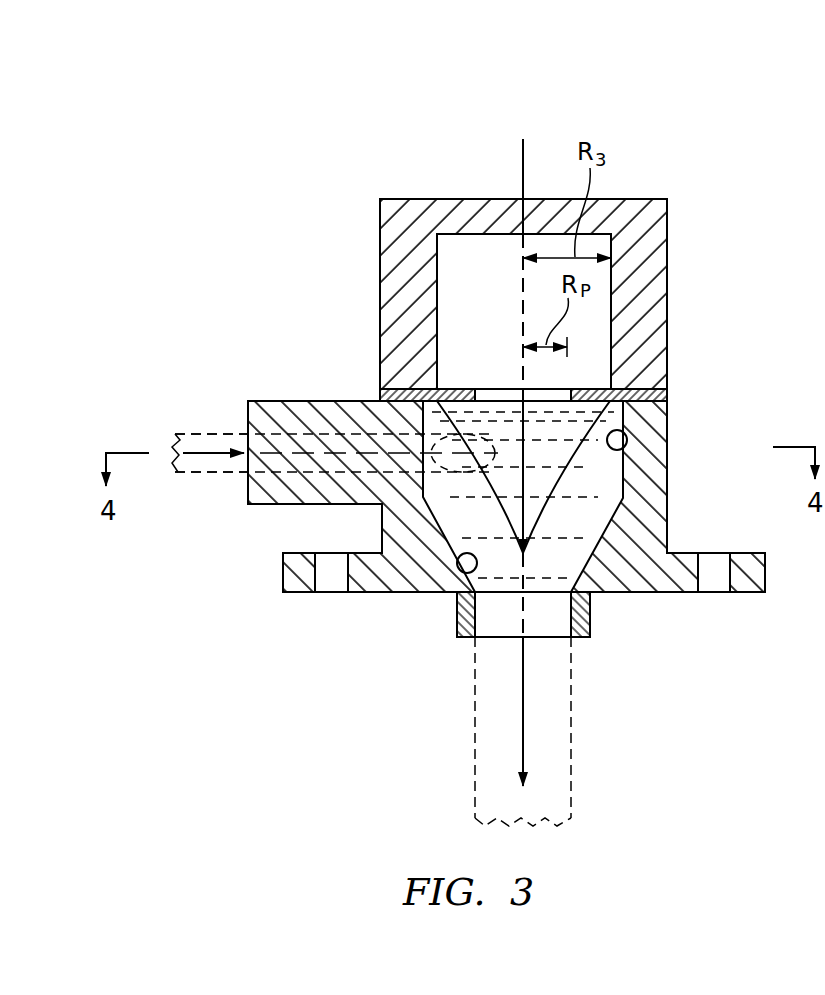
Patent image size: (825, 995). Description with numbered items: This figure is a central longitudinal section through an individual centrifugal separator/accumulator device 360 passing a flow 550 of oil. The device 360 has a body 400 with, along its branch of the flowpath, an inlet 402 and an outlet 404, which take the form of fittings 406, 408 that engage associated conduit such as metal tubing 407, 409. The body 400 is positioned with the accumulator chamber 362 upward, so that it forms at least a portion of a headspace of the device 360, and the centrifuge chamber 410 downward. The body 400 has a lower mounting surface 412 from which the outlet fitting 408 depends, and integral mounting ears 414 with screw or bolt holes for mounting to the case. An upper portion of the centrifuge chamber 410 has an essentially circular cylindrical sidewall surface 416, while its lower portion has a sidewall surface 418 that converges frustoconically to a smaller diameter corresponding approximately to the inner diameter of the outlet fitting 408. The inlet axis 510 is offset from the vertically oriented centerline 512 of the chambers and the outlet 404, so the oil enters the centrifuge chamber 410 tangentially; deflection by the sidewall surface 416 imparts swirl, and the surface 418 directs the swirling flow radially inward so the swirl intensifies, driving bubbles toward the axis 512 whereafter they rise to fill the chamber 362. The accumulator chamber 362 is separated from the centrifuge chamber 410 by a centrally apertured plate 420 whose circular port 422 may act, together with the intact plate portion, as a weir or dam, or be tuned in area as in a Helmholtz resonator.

The device 360 is at (694, 174).
The body 400 is at (685, 254).
The accumulator chamber 362 is at (503, 273).
The port 422 is at (561, 389).
The centrally apertured plate 420 is at (458, 388).
The inlet 402 is at (232, 490).
The centrifuge chamber 410 is at (503, 480).
The inlet fitting 406 is at (268, 400).
The metal tubing 407 is at (195, 432).
The inlet axis 510 is at (288, 452).
The flow 550 is at (205, 457).
The cylindrical sidewall surface 416 is at (622, 452).
The converging sidewall surface 418 is at (465, 572).
The mounting ears 414 is at (753, 550).
The lower mounting surface 412 is at (633, 593).
The outlet fitting 408 is at (582, 620).
The outlet 404 is at (497, 647).
The centerline 512 is at (527, 685).
The metal tubing 409 is at (475, 782).